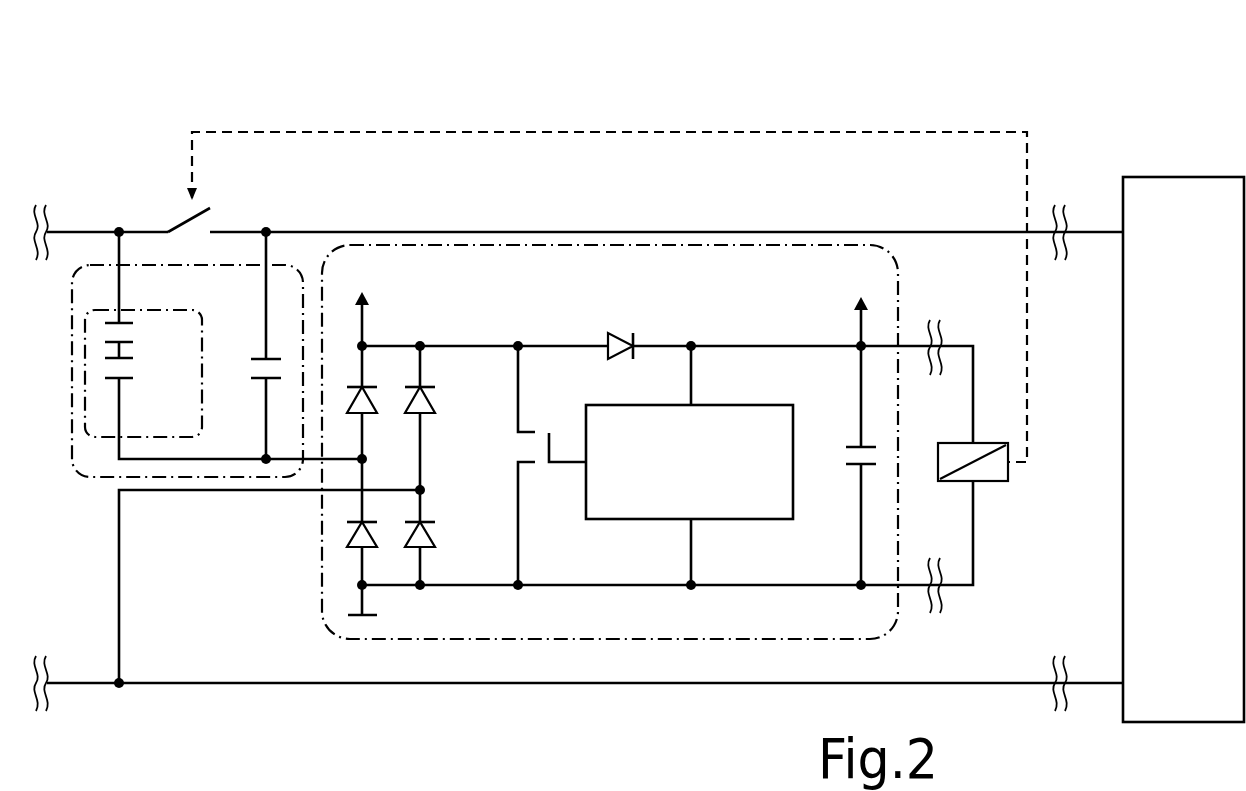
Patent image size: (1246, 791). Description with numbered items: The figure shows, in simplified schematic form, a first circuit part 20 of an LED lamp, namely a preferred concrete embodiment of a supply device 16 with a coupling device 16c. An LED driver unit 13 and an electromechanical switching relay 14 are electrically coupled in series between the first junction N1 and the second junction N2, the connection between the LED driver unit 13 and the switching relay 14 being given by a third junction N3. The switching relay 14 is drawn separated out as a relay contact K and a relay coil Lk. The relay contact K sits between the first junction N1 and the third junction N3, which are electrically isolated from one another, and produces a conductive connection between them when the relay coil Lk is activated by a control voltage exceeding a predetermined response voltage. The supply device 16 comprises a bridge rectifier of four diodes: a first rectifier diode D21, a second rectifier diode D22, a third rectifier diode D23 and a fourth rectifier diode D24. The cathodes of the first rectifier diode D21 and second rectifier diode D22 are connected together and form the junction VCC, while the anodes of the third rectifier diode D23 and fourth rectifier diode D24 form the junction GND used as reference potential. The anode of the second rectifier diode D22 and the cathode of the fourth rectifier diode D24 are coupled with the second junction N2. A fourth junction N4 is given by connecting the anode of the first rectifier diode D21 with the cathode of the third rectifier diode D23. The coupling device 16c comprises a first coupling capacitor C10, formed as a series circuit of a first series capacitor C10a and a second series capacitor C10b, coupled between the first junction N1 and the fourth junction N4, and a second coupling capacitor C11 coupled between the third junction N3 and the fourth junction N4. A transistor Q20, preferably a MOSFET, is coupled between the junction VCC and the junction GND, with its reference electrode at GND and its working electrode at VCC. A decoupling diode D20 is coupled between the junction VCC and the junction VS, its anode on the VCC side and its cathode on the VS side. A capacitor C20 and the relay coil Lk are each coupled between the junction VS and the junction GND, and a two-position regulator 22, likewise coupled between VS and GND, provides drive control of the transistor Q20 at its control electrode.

The first circuit part 20 is at (522, 103).
The electromechanical switching relay 14 is at (604, 301).
The relay contact K is at (189, 232).
The relay coil Lk is at (993, 478).
The LED driver unit 13 is at (1183, 449).
The supply device 16 is at (647, 442).
The coupling device 16c is at (217, 354).
The two-position regulator 22 is at (755, 511).
The first junction N1 is at (117, 228).
The second junction N2 is at (122, 689).
The third junction N3 is at (270, 228).
The fourth junction N4 is at (262, 456).
The first coupling capacitor C10 is at (223, 345).
The first series capacitor C10a is at (149, 330).
The second series capacitor C10b is at (149, 367).
The second coupling capacitor C11 is at (248, 345).
The capacitor C20 is at (838, 465).
The decoupling diode D20 is at (621, 331).
The first rectifier diode D21 is at (379, 402).
The second rectifier diode D22 is at (438, 418).
The third rectifier diode D23 is at (379, 522).
The fourth rectifier diode D24 is at (438, 537).
The transistor Q20 is at (552, 465).
The junction Vcc VCC is at (360, 305).
The junction Vs VS is at (862, 309).
The junction GND is at (390, 608).